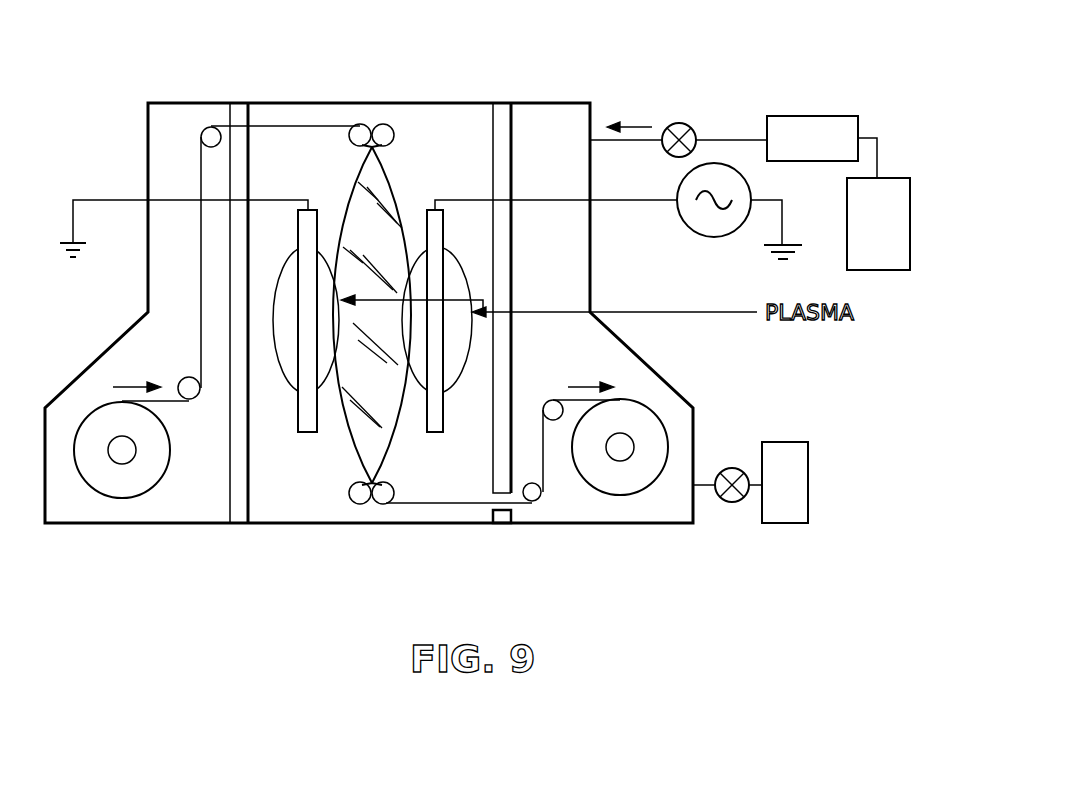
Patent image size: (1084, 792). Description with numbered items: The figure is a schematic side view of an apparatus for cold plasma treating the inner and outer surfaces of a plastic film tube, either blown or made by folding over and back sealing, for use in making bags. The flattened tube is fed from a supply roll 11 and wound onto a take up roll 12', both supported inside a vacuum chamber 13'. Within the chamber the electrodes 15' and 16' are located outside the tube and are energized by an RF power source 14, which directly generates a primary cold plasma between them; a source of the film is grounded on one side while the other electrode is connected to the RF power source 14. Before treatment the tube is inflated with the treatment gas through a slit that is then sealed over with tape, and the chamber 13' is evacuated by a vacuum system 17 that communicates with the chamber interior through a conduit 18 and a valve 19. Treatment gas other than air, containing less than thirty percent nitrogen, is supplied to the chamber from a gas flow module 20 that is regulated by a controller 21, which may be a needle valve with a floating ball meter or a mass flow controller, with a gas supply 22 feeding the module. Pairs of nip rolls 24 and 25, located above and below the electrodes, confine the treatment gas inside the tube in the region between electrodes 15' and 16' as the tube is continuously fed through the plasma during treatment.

The supply roll 11 is at (122, 508).
The take up roll 12' is at (620, 490).
The vacuum chamber 13' is at (399, 313).
The RF power source 14 is at (673, 213).
The electrode 15' is at (321, 231).
The electrode 16' is at (448, 231).
The vacuum system 17 is at (788, 483).
The conduit 18 is at (710, 470).
The valve 19 is at (733, 512).
The gas flow module 20 is at (812, 106).
The controller 21 is at (679, 115).
The gas supply 22 is at (894, 168).
The nip rolls 24 is at (371, 124).
The nip rolls 25 is at (378, 505).